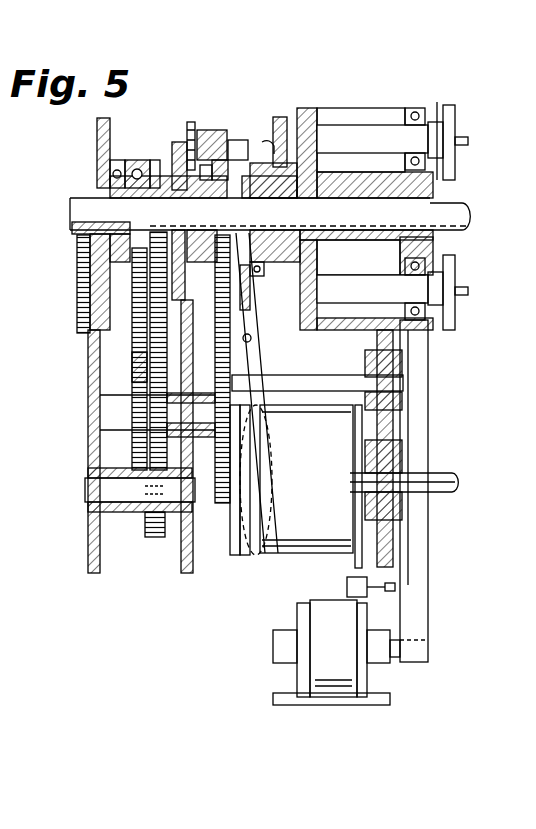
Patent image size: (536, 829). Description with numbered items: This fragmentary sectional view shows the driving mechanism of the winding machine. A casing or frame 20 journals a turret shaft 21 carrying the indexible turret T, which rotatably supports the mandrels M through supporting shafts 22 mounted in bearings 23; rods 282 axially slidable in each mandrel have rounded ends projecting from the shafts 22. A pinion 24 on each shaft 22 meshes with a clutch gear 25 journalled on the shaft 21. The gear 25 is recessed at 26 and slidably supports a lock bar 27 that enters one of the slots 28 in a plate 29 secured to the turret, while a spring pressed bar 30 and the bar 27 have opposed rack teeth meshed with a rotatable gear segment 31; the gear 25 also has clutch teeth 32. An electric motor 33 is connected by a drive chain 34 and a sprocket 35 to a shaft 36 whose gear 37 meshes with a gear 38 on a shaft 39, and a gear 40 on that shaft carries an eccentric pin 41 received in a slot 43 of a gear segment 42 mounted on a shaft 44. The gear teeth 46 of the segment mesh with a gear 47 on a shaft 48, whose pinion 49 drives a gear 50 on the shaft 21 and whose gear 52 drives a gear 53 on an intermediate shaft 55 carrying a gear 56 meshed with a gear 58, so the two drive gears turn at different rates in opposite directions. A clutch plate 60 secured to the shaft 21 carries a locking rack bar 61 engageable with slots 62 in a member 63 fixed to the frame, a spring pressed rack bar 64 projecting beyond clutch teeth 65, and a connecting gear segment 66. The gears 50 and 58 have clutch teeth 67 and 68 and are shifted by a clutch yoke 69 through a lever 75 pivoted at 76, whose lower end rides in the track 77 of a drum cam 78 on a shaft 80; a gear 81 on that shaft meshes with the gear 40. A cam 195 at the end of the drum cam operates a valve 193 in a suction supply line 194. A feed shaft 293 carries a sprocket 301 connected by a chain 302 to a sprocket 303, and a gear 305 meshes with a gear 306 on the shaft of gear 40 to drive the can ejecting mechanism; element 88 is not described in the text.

The turret shaft 21 is at (72, 212).
The spring pressed rack bar 64 is at (124, 209).
The clutch teeth 65 is at (177, 209).
The gear 58 is at (203, 231).
The clutch teeth 68 is at (245, 209).
The bar 30 is at (272, 209).
The slots 62 is at (97, 158).
The member 63 is at (100, 178).
The rotatable gear segment 66 is at (117, 165).
The locking rack bar 61 is at (137, 170).
The clutch teeth 67 is at (154, 180).
The gear 50 is at (177, 150).
The sprocket 301 is at (190, 122).
The chain 302 is at (215, 130).
The clutch yoke 69 is at (220, 174).
The feed shaft 293 is at (230, 140).
The rotatable gear segment 31 is at (265, 150).
The recess 26 is at (258, 170).
The pinion 24 is at (280, 117).
The supporting shafts 22 is at (370, 219).
The bearings 23 is at (410, 108).
The indexible turret T is at (438, 103).
The mandrels M is at (455, 116).
The rods 282 is at (468, 141).
The lock bar 27 is at (318, 148).
The slots 28 is at (318, 168).
The plate 29 is at (318, 253).
The clutch plate 60 is at (74, 228).
The shaft 48 is at (77, 298).
The gear 53 is at (77, 264).
The gear 52 is at (77, 281).
The intermediate shaft 55 is at (90, 298).
The gear 47 is at (77, 320).
The gear 88 is at (134, 299).
The pinion 49 is at (160, 322).
The gear 305 is at (125, 330).
The gear teeth 46 is at (132, 342).
The gear 306 is at (140, 354).
The gear 40 is at (130, 392).
The gear segment 42 is at (132, 420).
The pin 41 is at (145, 440).
The shaft 39 is at (191, 415).
The gear 38 is at (220, 503).
The clutch teeth 32 is at (236, 265).
The clutch gear 25 is at (256, 266).
The gear 56 is at (259, 290).
The casing or frame 20 is at (178, 575).
The slot 43 is at (105, 469).
The shaft 44 is at (90, 503).
The gear 81 is at (152, 537).
The sprocket 303 is at (248, 305).
The pivot 76 is at (252, 338).
The lever 75 is at (312, 331).
The shaft 36 is at (322, 385).
The gear 37 is at (232, 378).
The drive chain 34 is at (418, 580).
The sprocket 35 is at (428, 392).
The shaft 80 is at (455, 477).
The drum cam 78 is at (306, 479).
The track 77 is at (245, 515).
The cam 195 is at (357, 520).
The valve 193 is at (347, 592).
The suction supply line 194 is at (347, 585).
The electric motor 33 is at (336, 652).